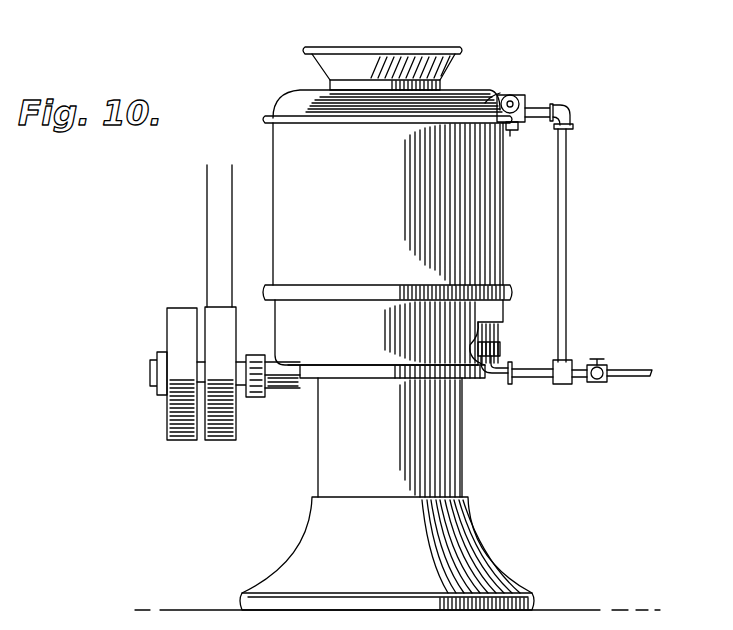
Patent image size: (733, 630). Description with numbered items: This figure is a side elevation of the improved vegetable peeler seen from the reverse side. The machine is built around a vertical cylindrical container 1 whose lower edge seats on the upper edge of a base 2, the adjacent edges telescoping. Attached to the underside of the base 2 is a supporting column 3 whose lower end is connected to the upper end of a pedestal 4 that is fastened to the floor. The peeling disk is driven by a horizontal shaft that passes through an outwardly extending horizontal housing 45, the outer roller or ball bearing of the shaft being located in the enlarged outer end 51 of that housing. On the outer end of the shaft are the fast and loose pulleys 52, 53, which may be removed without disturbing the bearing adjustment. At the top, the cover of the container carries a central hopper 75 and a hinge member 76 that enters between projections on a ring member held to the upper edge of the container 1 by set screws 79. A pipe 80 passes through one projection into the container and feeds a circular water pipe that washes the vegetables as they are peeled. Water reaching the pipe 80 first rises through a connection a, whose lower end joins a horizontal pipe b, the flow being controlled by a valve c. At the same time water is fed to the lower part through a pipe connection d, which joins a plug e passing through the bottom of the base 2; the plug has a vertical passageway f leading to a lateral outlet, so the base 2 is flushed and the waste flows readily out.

The vertical cylindrical container 1 is at (387, 195).
The base 2 is at (389, 339).
The supporting column 3 is at (390, 437).
The pedestal 4 is at (387, 553).
The horizontal housing 45 is at (300, 395).
The enlarged outer end of housing 51 is at (259, 397).
The fast pulley 52 is at (212, 412).
The loose pulley 53 is at (178, 328).
The hopper 75 is at (372, 62).
The hinge member 76 is at (518, 97).
The set screws 79 is at (513, 132).
The pipe 80 is at (538, 109).
The connection a is at (565, 232).
The horizontal pipe b is at (577, 380).
The valve c is at (619, 357).
The pipe connection d is at (530, 379).
The plug e is at (500, 345).
The vertical passageway f is at (500, 366).